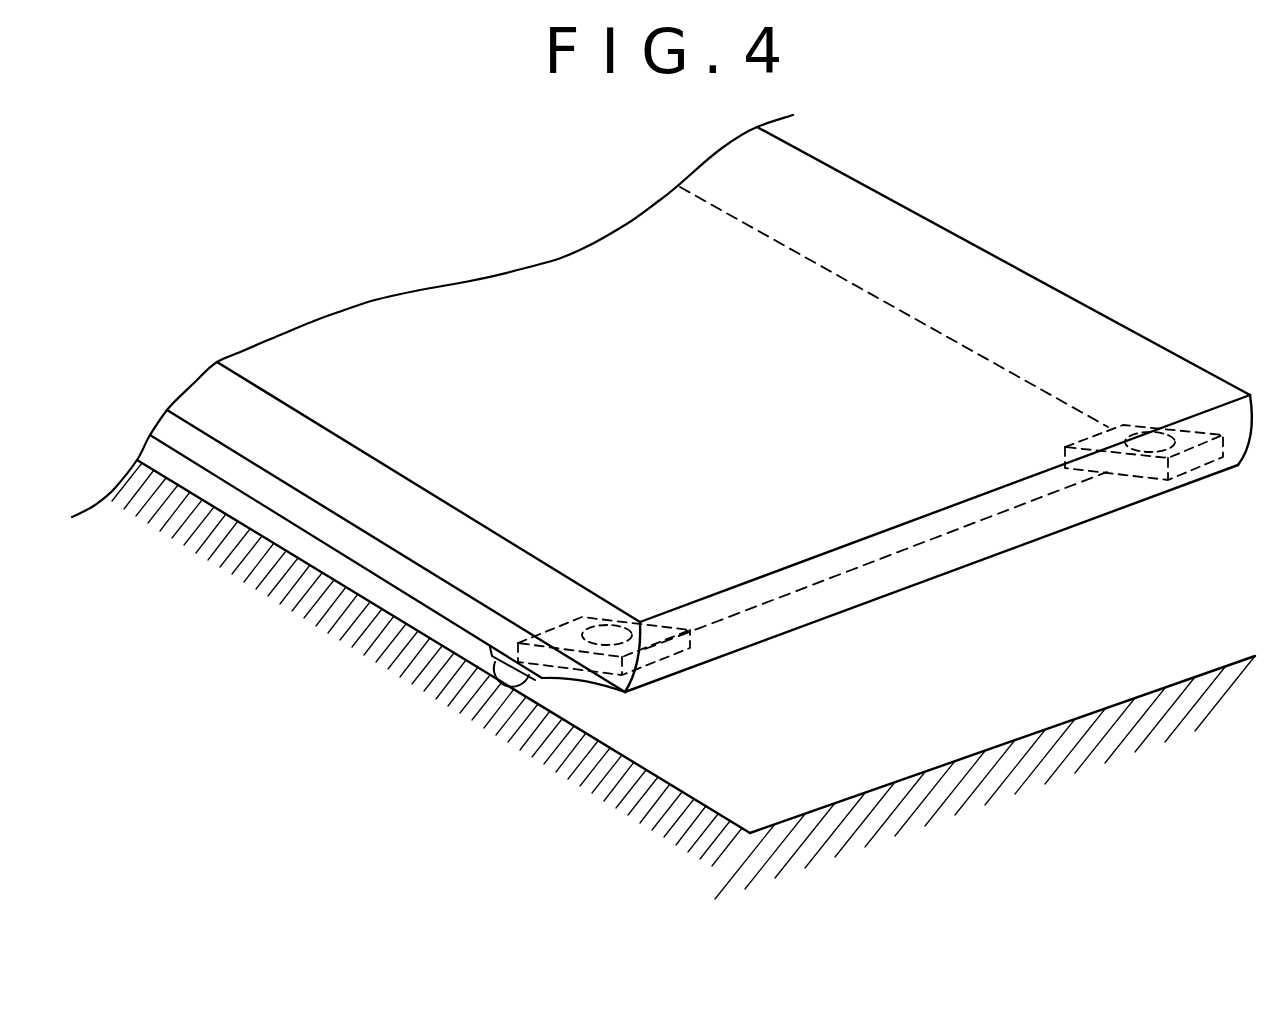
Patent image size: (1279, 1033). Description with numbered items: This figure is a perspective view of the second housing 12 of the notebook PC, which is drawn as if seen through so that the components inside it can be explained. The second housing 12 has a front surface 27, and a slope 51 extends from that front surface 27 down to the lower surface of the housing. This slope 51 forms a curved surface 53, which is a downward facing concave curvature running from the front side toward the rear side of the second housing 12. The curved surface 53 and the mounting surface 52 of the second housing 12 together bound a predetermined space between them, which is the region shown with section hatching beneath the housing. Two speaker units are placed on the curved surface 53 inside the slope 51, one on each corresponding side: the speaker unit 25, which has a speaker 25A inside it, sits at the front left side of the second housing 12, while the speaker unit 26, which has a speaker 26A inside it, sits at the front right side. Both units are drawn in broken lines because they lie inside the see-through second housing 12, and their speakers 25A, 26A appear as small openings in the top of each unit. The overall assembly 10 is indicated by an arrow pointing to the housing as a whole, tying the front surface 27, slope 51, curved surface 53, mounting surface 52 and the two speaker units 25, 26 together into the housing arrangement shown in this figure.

The plate member 10 is at (1047, 195).
The second housing 12 is at (302, 512).
The speaker unit 25 is at (660, 655).
The speaker 25A is at (607, 633).
The speaker unit 26 is at (1200, 463).
The speaker 26A is at (1153, 440).
The front surface 27 is at (1002, 535).
The slope 51 is at (562, 682).
The mounting surface 52 is at (817, 765).
The curved surface 53 is at (865, 588).